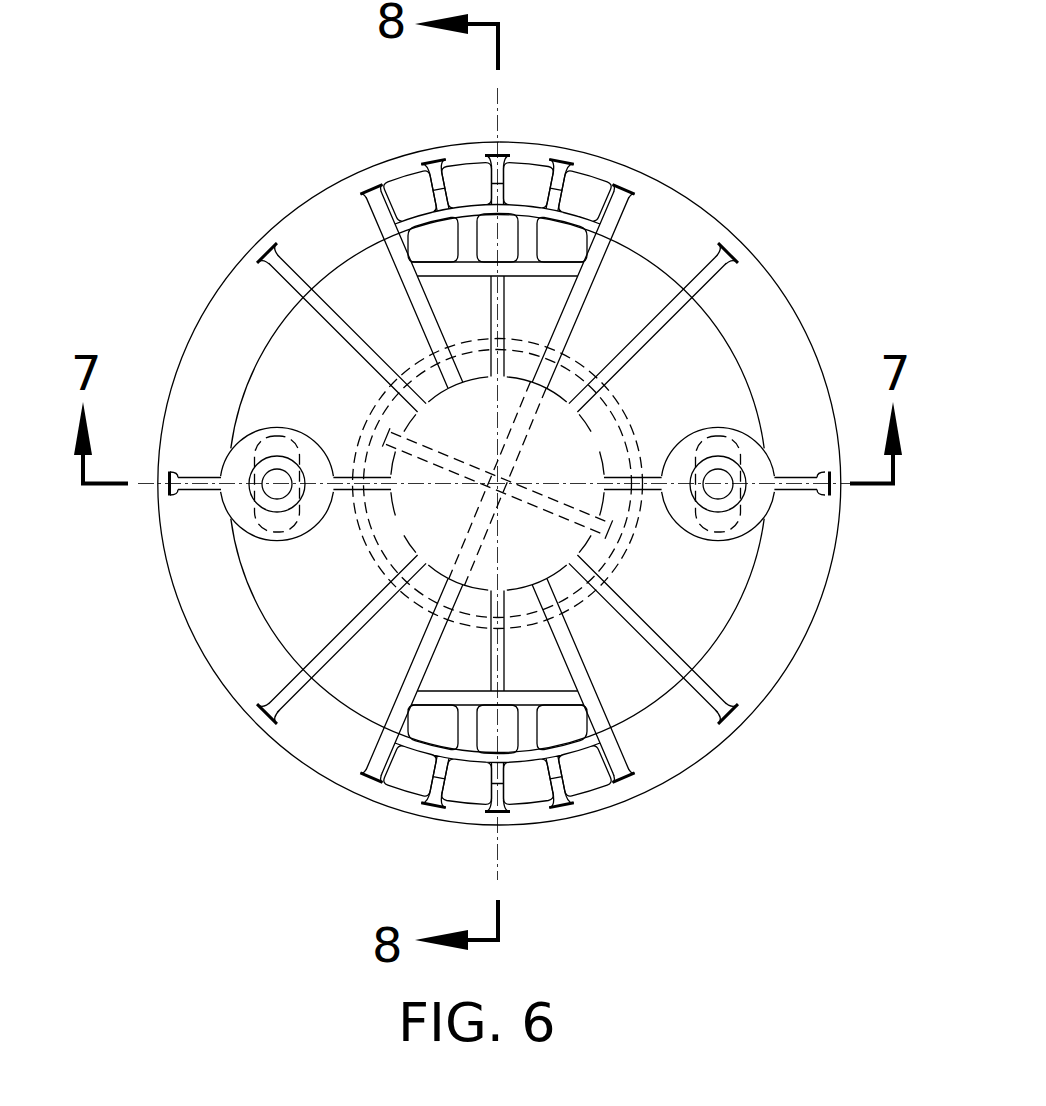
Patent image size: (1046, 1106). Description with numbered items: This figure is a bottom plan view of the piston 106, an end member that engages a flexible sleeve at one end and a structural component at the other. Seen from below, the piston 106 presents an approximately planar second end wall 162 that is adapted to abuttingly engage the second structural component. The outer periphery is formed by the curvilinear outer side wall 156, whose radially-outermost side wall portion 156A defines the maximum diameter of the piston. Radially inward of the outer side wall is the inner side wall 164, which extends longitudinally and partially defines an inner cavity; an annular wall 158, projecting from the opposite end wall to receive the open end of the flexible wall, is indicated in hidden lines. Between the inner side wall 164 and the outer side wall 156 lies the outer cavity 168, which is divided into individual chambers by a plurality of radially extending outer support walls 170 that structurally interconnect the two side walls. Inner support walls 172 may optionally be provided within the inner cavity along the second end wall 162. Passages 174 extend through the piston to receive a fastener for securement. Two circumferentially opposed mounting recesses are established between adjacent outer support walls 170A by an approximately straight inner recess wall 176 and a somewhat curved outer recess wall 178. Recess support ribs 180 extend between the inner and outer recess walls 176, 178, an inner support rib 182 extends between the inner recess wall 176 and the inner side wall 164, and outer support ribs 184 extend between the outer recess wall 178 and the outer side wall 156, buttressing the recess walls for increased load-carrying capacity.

The piston 106 is at (760, 128).
The outer side wall 156 is at (752, 296).
The radially-outermost side wall portion 156A is at (834, 565).
The annular wall 158 is at (427, 352).
The second end wall 162 is at (425, 523).
The inner side wall 164 is at (396, 522).
The outer cavity 168 is at (290, 363).
The outer support walls 170 is at (718, 258).
The adjacent outer support walls 170A is at (388, 215).
The inner support walls 172 is at (537, 473).
The passages 174 is at (270, 472).
The inner recess wall 176 is at (460, 272).
The outer recess wall 178 is at (523, 205).
The recess support ribs 180 is at (468, 243).
The inner support rib 182 is at (507, 320).
The outer support ribs 184 is at (438, 163).